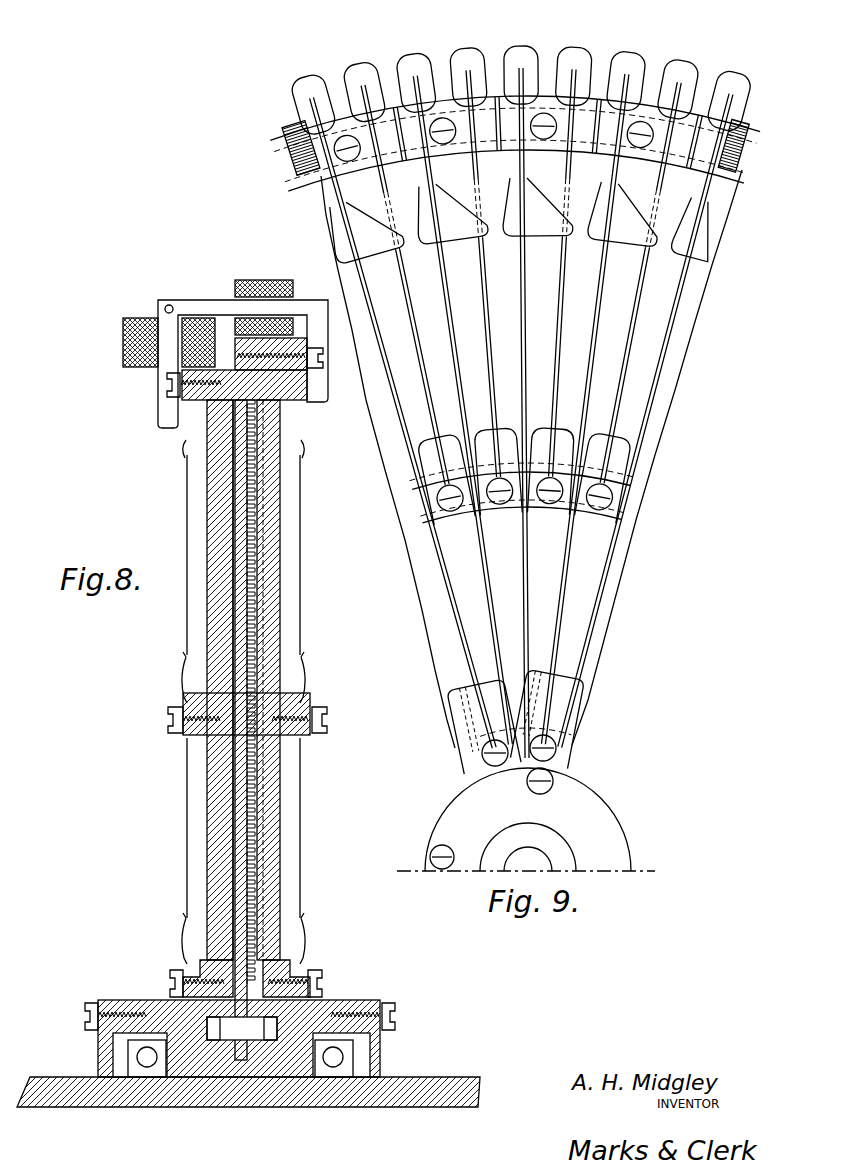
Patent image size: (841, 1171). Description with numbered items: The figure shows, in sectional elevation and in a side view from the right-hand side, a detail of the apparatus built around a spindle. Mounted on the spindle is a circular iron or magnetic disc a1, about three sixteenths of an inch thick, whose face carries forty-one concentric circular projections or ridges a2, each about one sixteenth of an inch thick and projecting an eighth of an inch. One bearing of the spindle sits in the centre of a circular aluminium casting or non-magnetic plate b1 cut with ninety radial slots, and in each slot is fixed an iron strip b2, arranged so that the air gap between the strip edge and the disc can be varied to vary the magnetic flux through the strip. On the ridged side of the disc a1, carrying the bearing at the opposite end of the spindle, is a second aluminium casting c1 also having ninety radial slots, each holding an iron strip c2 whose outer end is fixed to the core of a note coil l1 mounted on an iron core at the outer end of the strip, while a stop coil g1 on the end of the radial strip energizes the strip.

In FIG. 8, the note coil l1 is at (278, 272).
In FIG. 9, the note coil l1 is at (399, 65).
In FIG. 8, the stop coil g1 is at (146, 368).
In FIG. 9, the stop coil g1 is at (536, 100).
In FIG. 8, the iron strip b2 is at (197, 774).
In FIG. 8, the iron strip c2 is at (301, 773).
In FIG. 9, the iron strip c2 is at (484, 573).
In FIG. 8, the concentric circular projections or ridges a2 is at (258, 842).
In FIG. 8, the circular iron or magnetic disc a1 is at (255, 893).
In FIG. 8, the circular aluminium casting or non-magnetic plate b1 is at (128, 1003).
In FIG. 8, the aluminium casting c1 is at (322, 1000).
In FIG. 9, the aluminium casting c1 is at (468, 763).